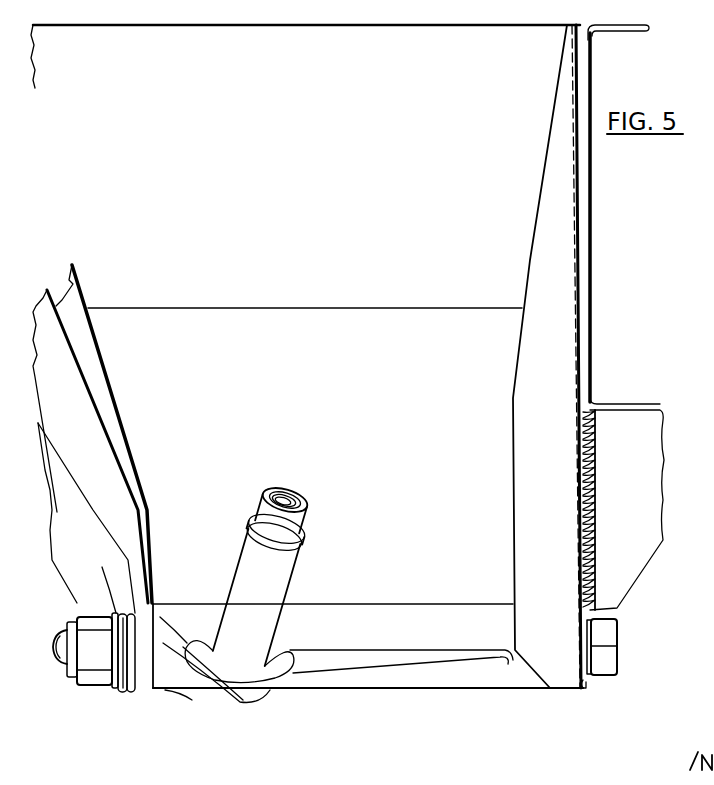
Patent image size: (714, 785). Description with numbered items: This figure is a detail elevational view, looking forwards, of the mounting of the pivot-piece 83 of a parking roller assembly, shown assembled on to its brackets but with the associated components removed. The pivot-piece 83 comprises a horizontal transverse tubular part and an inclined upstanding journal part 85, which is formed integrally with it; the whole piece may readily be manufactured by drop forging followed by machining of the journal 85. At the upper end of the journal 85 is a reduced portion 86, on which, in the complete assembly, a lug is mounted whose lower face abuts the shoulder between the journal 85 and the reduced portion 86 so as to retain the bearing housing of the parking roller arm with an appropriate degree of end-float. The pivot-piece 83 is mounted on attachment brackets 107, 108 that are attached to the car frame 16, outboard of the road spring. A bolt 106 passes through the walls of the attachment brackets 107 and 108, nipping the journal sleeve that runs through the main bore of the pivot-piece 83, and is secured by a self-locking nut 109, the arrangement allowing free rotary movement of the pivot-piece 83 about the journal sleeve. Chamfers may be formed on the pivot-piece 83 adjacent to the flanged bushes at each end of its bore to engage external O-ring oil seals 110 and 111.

The car frame 16 is at (592, 229).
The pivot-piece 83 is at (441, 673).
The inclined upstanding journal part 85 is at (286, 568).
The reduced portion 86 is at (304, 526).
The bolt 106 is at (55, 634).
The attachment bracket 107 is at (588, 683).
The attachment bracket 108 is at (134, 690).
The self-locking nut 109 is at (97, 684).
The external O-ring oil seal 110 is at (583, 690).
The external O-ring oil seal 111 is at (173, 690).